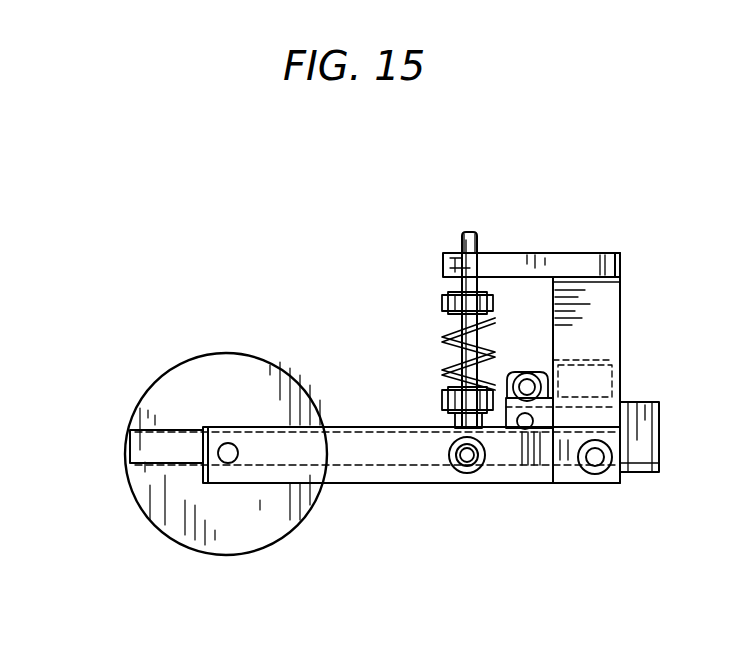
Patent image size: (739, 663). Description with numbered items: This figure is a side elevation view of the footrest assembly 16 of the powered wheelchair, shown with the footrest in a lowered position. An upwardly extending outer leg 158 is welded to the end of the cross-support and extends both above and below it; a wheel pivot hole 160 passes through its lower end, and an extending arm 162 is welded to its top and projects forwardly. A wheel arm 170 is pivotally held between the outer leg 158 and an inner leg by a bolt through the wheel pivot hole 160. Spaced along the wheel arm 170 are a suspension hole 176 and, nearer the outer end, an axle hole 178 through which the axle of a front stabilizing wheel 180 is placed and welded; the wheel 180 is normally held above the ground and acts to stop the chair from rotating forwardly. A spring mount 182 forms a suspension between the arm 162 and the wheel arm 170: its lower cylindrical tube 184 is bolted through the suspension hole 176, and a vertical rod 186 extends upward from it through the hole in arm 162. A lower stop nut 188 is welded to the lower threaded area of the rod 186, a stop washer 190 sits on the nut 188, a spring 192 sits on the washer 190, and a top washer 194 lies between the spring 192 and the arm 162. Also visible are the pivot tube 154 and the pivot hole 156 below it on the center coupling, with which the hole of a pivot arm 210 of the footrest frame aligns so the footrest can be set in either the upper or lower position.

The footrest assembly 16 is at (621, 250).
The pivot tube 154 is at (548, 374).
The pivot hole 156 is at (524, 430).
The outer leg 158 is at (618, 333).
The wheel pivot hole 160 is at (595, 467).
The extending arm 162 is at (587, 253).
The wheel arm 170 is at (290, 426).
The suspension hole 176 is at (467, 476).
The axle hole 178 is at (228, 463).
The front stabilizing wheel 180 is at (173, 542).
The spring mount 182 is at (460, 231).
The lower cylindrical tube 184 is at (487, 454).
The vertical rod 186 is at (477, 229).
The lower stop nut 188 is at (453, 422).
The stop washer 190 is at (447, 405).
The spring 192 is at (447, 335).
The top washer 194 is at (450, 292).
The pivot arm 210 is at (541, 384).